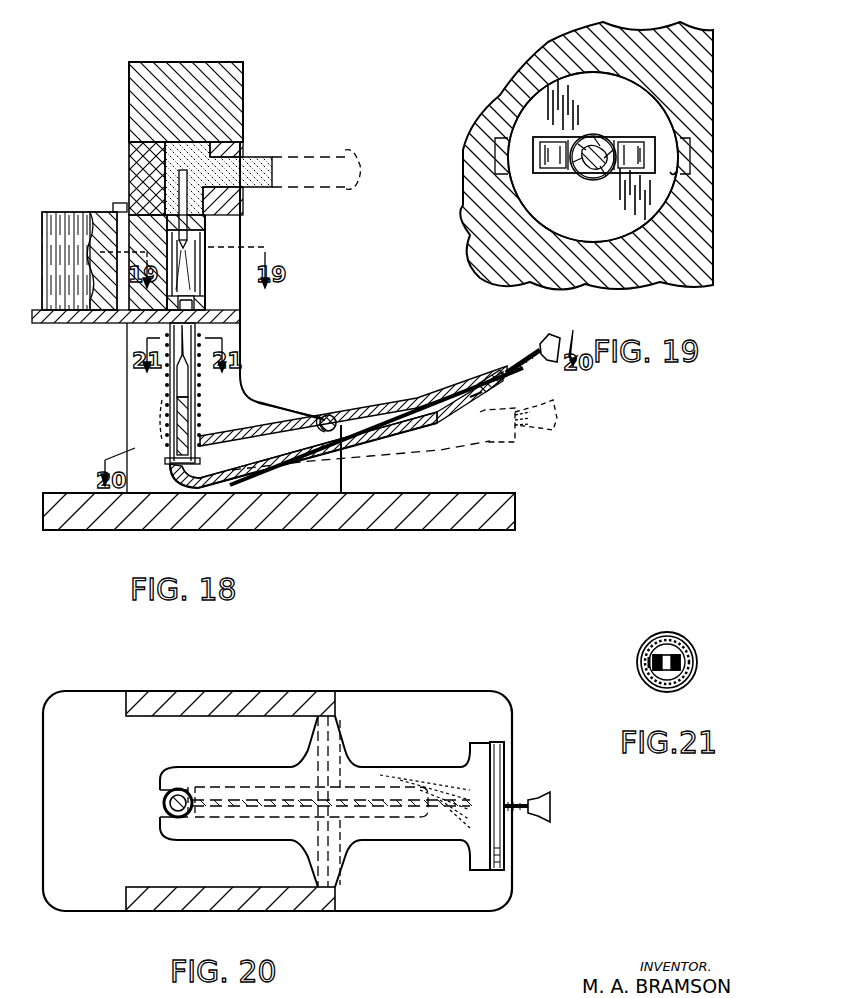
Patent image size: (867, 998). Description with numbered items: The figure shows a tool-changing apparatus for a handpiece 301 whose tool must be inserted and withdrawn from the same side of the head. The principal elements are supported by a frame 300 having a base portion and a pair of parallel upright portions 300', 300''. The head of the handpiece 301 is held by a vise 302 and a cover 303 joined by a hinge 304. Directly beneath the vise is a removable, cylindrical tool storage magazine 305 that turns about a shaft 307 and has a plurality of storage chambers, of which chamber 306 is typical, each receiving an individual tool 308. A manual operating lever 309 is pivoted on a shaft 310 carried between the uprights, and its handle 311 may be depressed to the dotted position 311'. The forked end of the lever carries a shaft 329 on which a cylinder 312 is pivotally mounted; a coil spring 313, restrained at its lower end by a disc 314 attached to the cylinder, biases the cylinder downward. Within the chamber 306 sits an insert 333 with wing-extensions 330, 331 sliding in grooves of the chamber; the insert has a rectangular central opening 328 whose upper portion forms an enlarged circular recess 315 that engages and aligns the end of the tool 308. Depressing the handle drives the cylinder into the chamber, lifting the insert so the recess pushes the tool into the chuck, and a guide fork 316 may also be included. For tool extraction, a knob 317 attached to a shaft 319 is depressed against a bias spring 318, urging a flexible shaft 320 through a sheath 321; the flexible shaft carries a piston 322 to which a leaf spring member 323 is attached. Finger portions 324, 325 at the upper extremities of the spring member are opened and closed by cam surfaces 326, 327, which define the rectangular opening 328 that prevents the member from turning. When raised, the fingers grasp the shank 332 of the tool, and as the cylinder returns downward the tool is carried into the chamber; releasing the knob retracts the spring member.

In FIG. 18, the frame 300 is at (306, 511).
In FIG. 20, the frame 300 is at (277, 788).
In FIG. 20, the upright portion 300' is at (230, 688).
In FIG. 20, the upright portion 300'' is at (230, 910).
In FIG. 18, the handpiece 301 is at (309, 153).
In FIG. 18, the vise 302 is at (243, 213).
In FIG. 18, the cover 303 is at (243, 90).
In FIG. 18, the hinge 304 is at (129, 140).
In FIG. 18, the tool storage magazine 305 is at (66, 215).
In FIG. 19, the tool storage magazine 305 is at (712, 147).
In FIG. 18, the storage chamber 306 is at (230, 233).
In FIG. 19, the storage chamber 306 is at (660, 190).
In FIG. 18, the shaft 307 is at (113, 205).
In FIG. 18, the tool 308 is at (243, 200).
In FIG. 18, the manual operating lever 309 is at (368, 384).
In FIG. 20, the manual operating lever 309 is at (370, 772).
In FIG. 18, the shaft 310 is at (330, 414).
In FIG. 18, the handle 311 is at (491, 356).
In FIG. 20, the handle 311 is at (498, 818).
In FIG. 18, the handle depressed position 311' is at (394, 435).
In FIG. 18, the cylinder 312 is at (236, 404).
In FIG. 20, the cylinder 312 is at (162, 803).
In FIG. 21, the cylinder 312 is at (650, 635).
In FIG. 18, the coil spring 313 is at (200, 418).
In FIG. 21, the coil spring 313 is at (688, 668).
In FIG. 18, the disc 314 is at (162, 455).
In FIG. 21, the disc 314 is at (650, 680).
In FIG. 18, the circular recess 315 is at (200, 286).
In FIG. 19, the circular recess 315 is at (596, 175).
In FIG. 18, the guide fork 316 is at (172, 198).
In FIG. 18, the knob 317 is at (553, 338).
In FIG. 20, the knob 317 is at (550, 804).
In FIG. 18, the bias spring 318 is at (522, 374).
In FIG. 18, the shaft 319 is at (492, 385).
In FIG. 18, the flexible shaft 320 is at (460, 394).
In FIG. 18, the sheath 321 is at (262, 470).
In FIG. 18, the piston 322 is at (165, 418).
In FIG. 20, the piston 322 is at (170, 812).
In FIG. 18, the leaf spring member 323 is at (190, 395).
In FIG. 21, the leaf spring member 323 is at (666, 652).
In FIG. 19, the finger portion 324 is at (558, 165).
In FIG. 19, the finger portion 325 is at (626, 150).
In FIG. 18, the cam surface 326 is at (168, 330).
In FIG. 21, the cam surface 326 is at (650, 663).
In FIG. 18, the cam surface 327 is at (243, 323).
In FIG. 21, the cam surface 327 is at (680, 660).
In FIG. 18, the rectangular opening 328 is at (201, 301).
In FIG. 19, the rectangular opening 328 is at (540, 140).
In FIG. 20, the shaft 329 is at (188, 768).
In FIG. 18, the wing-extension 330 is at (167, 324).
In FIG. 19, the wing-extension 330 is at (500, 164).
In FIG. 18, the wing-extension 331 is at (195, 304).
In FIG. 19, the wing-extension 331 is at (676, 156).
In FIG. 19, the shank 332 is at (594, 145).
In FIG. 19, the insert 333 is at (594, 179).